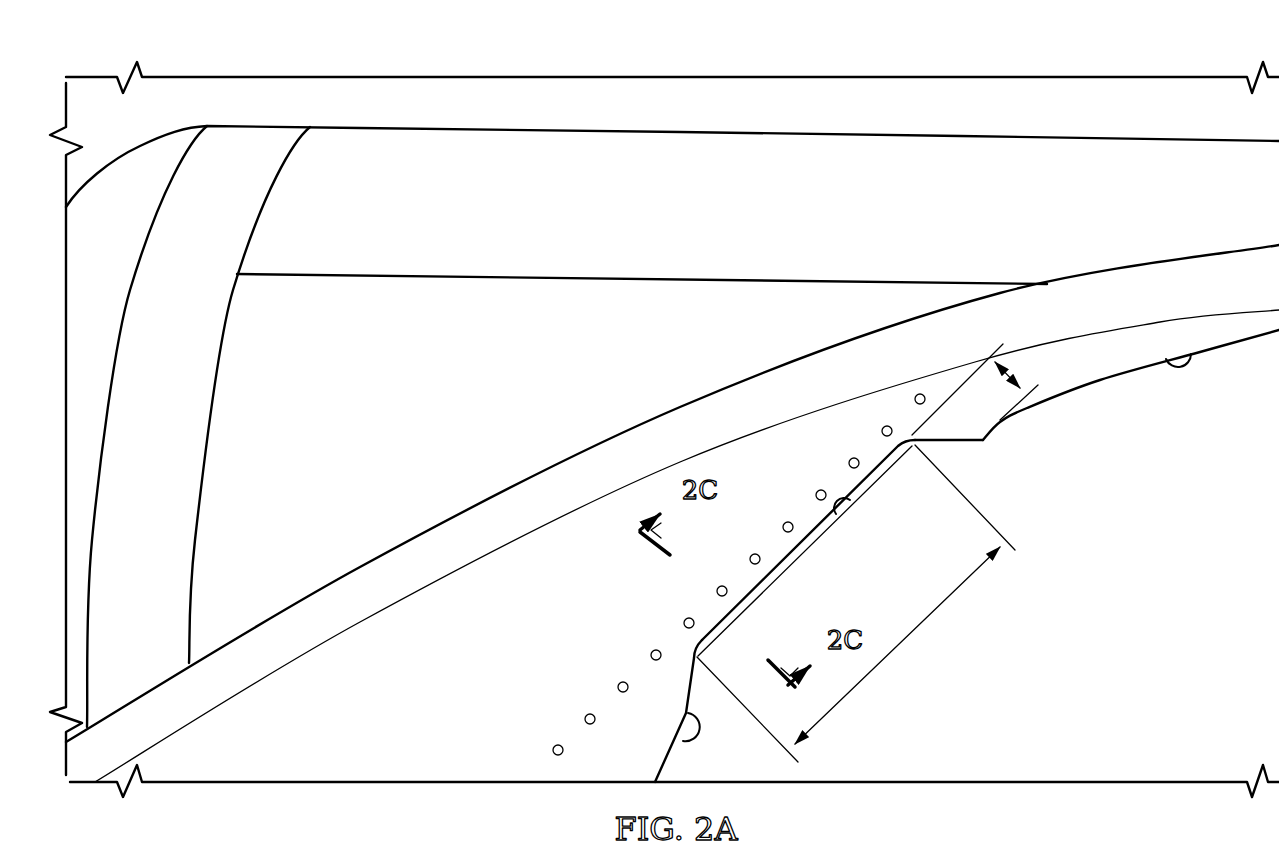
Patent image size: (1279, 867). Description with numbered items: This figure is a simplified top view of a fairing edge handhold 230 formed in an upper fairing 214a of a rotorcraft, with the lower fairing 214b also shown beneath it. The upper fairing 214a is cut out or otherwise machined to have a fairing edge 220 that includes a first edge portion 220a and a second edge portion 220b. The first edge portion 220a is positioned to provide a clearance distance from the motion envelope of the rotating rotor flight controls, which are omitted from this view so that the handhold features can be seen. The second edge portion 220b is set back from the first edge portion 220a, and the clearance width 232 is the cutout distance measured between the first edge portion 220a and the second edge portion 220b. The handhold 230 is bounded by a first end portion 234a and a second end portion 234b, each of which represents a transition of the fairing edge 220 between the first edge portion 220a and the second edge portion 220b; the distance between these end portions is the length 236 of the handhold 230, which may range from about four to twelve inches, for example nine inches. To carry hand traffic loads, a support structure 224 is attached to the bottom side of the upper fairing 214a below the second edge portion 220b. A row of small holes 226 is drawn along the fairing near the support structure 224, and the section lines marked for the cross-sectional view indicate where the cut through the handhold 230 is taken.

The upper fairing 214a is at (802, 382).
The lower fairing 214b is at (444, 152).
The fairing edge 220 is at (1108, 393).
The first edge portion 220a is at (1188, 353).
The second edge portion 220b is at (850, 499).
The support structure 224 is at (826, 550).
The fastener holes 226 is at (721, 585).
The fairing edge handhold 230 is at (893, 516).
The clearance width 232 is at (1010, 373).
The first end portion 234a is at (682, 738).
The second end portion 234b is at (943, 440).
The length 236 is at (910, 634).